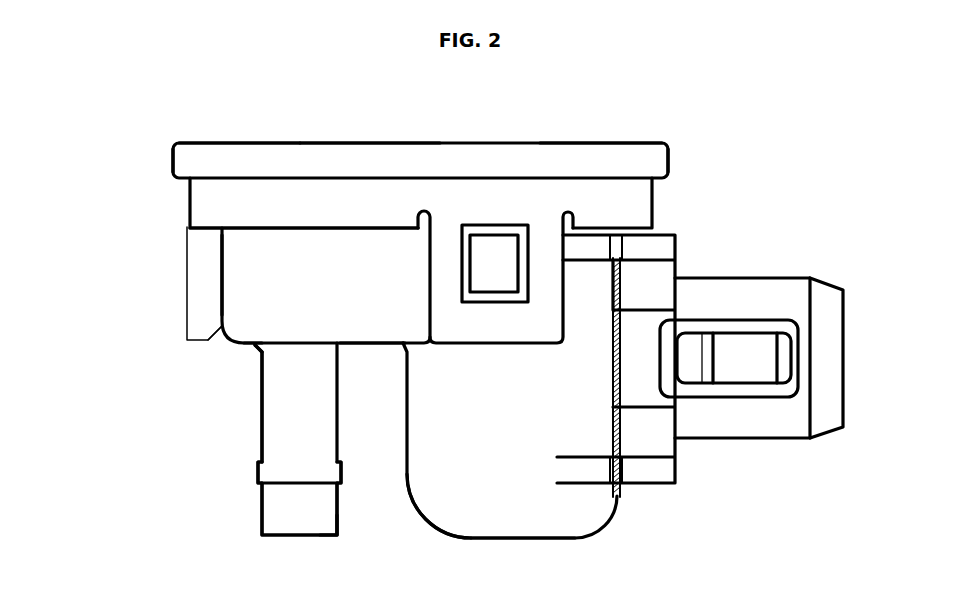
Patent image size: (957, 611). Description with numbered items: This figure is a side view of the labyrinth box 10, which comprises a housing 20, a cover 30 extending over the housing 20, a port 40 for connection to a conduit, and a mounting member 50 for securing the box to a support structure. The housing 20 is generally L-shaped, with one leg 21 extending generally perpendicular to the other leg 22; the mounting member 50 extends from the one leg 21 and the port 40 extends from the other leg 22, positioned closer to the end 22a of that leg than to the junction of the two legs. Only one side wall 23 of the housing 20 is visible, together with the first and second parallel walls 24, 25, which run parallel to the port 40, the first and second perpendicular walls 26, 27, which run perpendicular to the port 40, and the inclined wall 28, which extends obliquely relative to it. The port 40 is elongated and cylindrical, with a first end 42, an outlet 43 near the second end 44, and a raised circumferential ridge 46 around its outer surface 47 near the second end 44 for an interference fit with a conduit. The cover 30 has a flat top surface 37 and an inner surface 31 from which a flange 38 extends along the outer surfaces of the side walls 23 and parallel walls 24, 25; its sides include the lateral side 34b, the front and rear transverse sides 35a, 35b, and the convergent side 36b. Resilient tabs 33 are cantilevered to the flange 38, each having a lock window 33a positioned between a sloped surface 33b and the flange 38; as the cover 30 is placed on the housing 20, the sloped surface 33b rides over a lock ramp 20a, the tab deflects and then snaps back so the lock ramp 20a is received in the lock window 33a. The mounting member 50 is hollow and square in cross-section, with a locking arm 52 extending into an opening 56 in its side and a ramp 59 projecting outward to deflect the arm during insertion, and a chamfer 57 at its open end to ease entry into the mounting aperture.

The labyrinth box 10 is at (110, 104).
The housing 20 is at (238, 346).
The lock ramp 20a is at (503, 263).
The one leg 21 is at (470, 515).
The other leg 22 is at (275, 258).
The end of the other housing leg 22a is at (222, 272).
The second parallel wall 25 is at (143, 275).
The side wall 23 is at (247, 255).
The first parallel wall 24 is at (616, 345).
The first perpendicular wall 26 is at (505, 540).
The second perpendicular wall 27 is at (369, 345).
The inclined wall 28 is at (410, 450).
The cover 30 is at (670, 142).
The inner surface 31 is at (342, 180).
The resilient tab 33 is at (196, 305).
The lock window 33a is at (492, 243).
The sloped surface 33b is at (216, 340).
The lateral side 34b is at (616, 160).
The front transverse side 35a is at (665, 163).
The rear transverse side 35b is at (173, 160).
The convergent side 36b is at (297, 160).
The flat top surface 37 is at (370, 145).
The flange 38 is at (185, 199).
The port 40 is at (258, 511).
The first end 42 is at (255, 348).
The outlet 43 is at (297, 540).
The second end 44 is at (328, 538).
The raised circumferential ridge 46 is at (285, 473).
The outer surface 47 is at (260, 432).
The mounting member 50 is at (776, 274).
The locking arm 52 is at (692, 348).
The opening 56 is at (697, 388).
The chamfer 57 is at (830, 306).
The ramp 59 is at (755, 351).